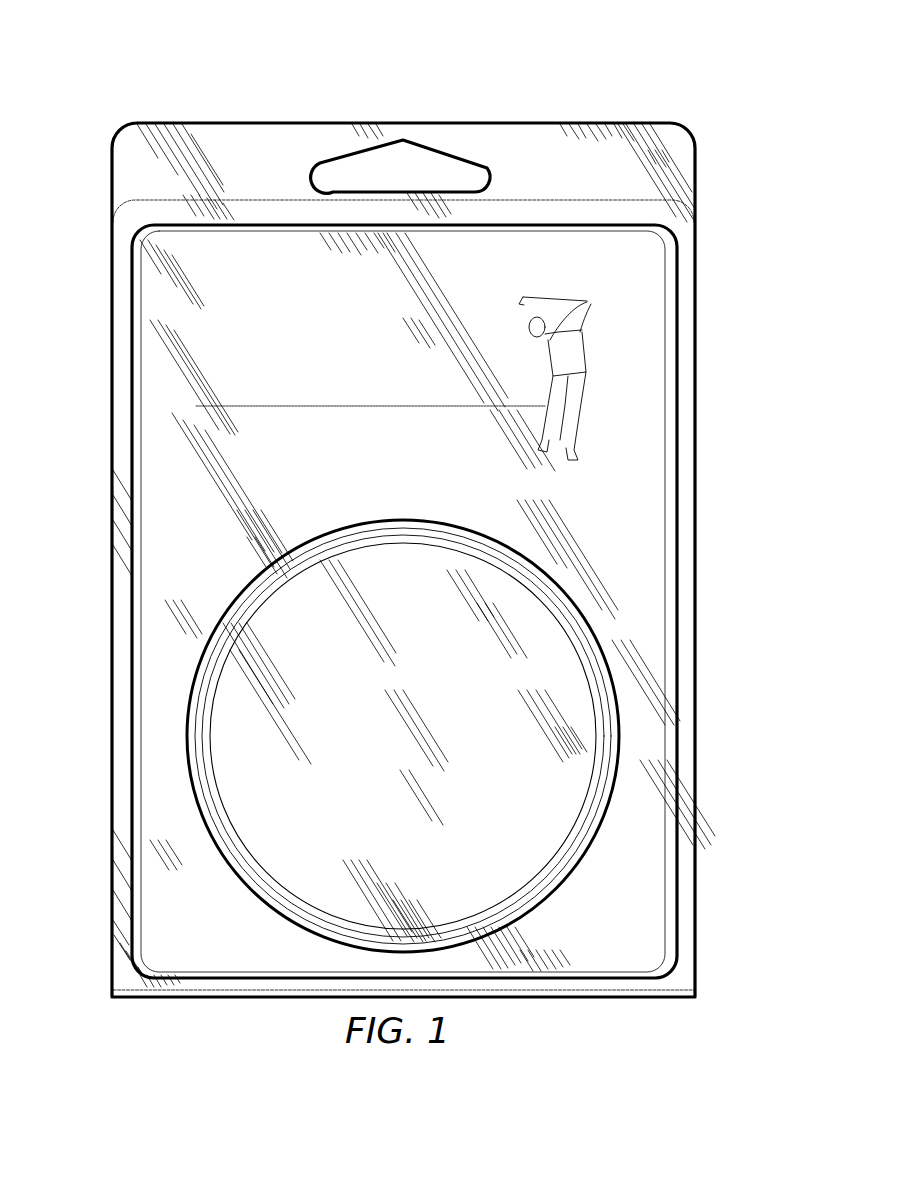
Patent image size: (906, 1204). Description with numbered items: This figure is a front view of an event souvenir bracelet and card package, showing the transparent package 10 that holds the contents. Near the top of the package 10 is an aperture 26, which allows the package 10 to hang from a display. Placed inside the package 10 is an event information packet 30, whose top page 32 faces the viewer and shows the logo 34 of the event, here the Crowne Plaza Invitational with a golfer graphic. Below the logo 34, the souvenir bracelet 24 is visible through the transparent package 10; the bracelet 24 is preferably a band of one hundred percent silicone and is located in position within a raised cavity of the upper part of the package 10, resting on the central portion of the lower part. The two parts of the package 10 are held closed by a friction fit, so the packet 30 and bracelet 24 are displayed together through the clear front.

The transparent package 10 is at (513, 75).
The bracelet 24 is at (555, 873).
The aperture 26 is at (318, 173).
The event information packet 30 is at (647, 440).
The top page 32 is at (158, 440).
The logo 34 is at (393, 362).